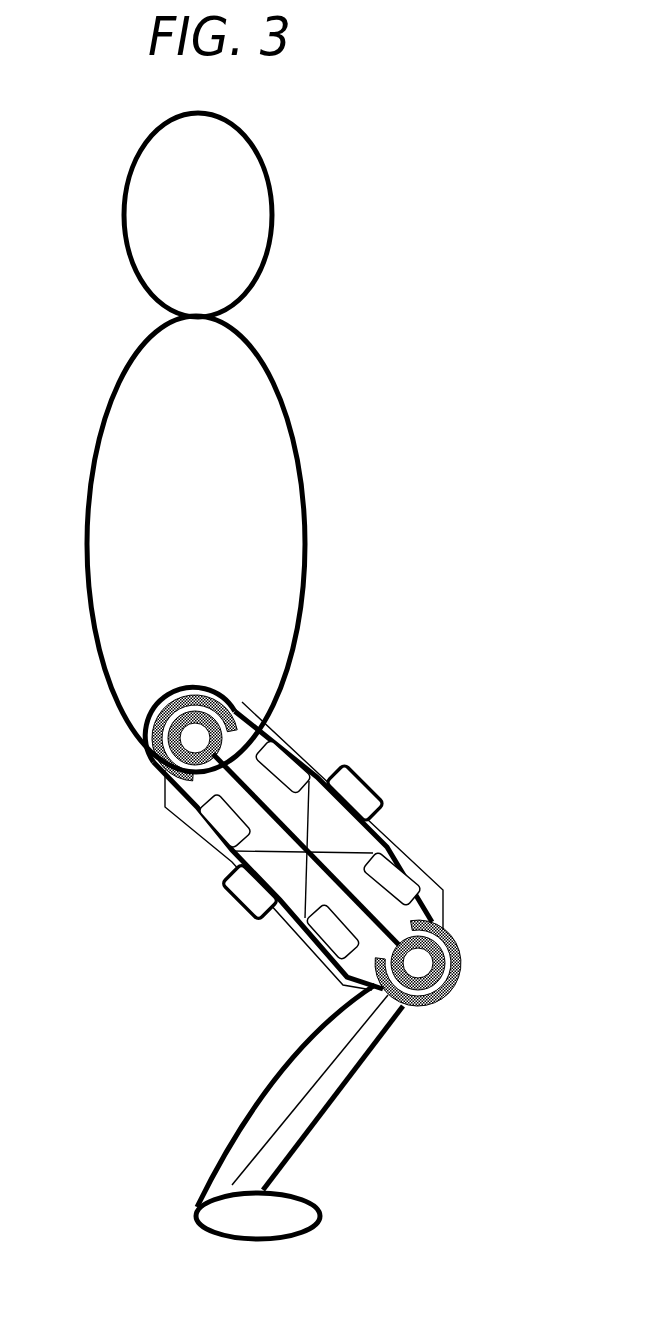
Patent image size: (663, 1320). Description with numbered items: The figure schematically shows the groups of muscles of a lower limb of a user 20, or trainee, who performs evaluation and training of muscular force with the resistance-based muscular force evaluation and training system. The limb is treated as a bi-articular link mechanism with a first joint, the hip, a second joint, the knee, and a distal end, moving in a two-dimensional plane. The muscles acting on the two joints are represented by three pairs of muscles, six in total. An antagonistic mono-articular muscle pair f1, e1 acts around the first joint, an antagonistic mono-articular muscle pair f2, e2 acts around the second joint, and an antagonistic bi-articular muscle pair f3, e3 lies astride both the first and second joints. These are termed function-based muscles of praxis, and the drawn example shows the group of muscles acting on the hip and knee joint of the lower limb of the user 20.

The user 20 is at (267, 478).
The mono-articular extensor muscle around the first joint e1 is at (283, 766).
The mono-articular extensor muscle around the second joint e2 is at (392, 879).
The bi-articular extensor muscle e3 is at (355, 793).
The mono-articular flexor muscle around the first joint f1 is at (225, 821).
The mono-articular flexor muscle around the second joint f2 is at (332, 932).
The bi-articular flexor muscle f3 is at (250, 892).